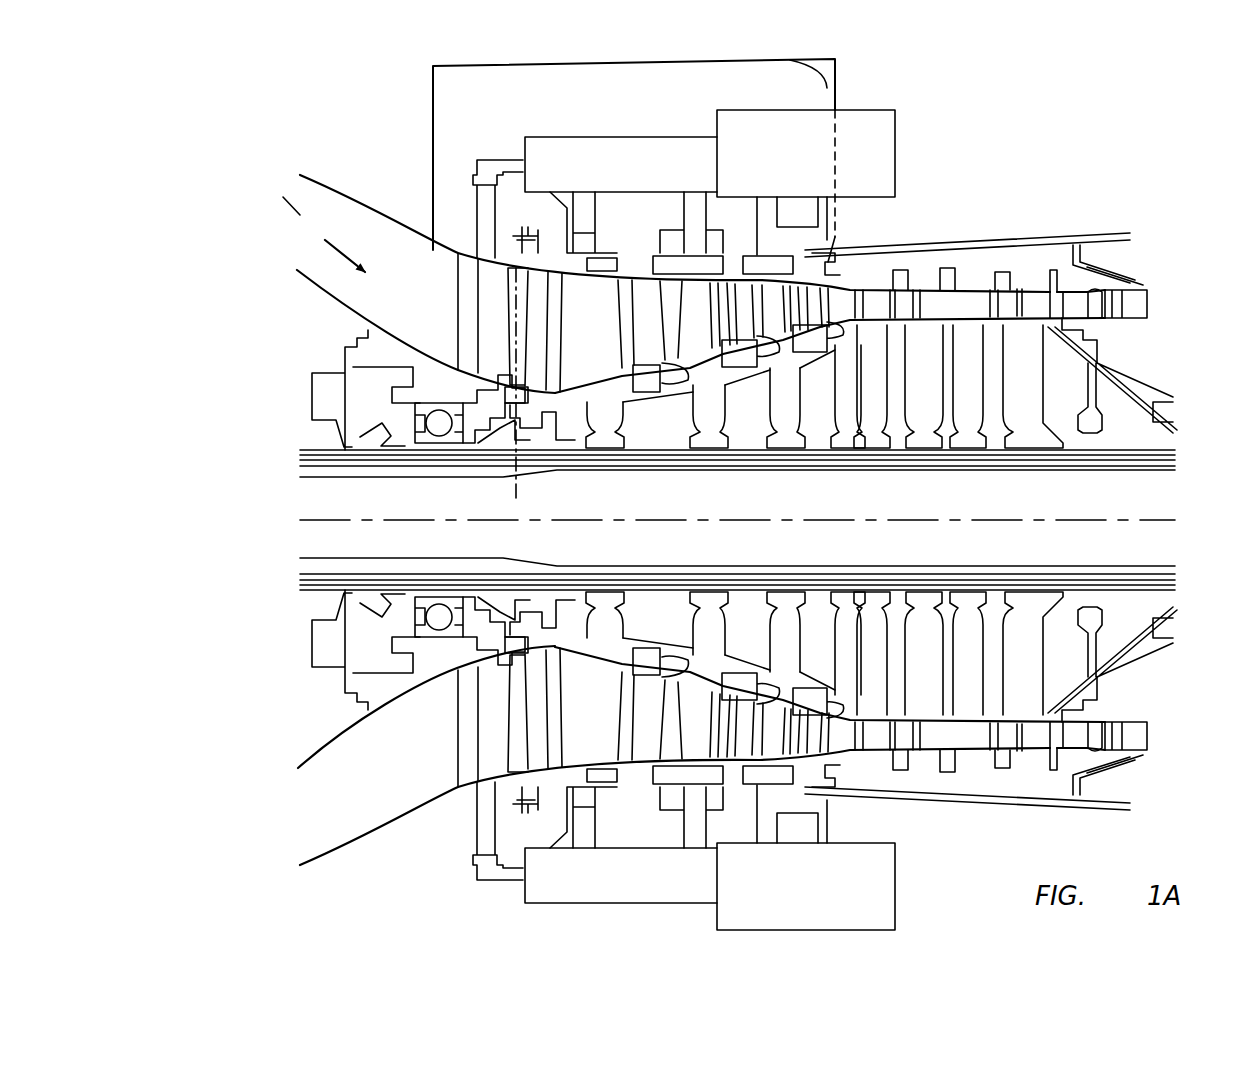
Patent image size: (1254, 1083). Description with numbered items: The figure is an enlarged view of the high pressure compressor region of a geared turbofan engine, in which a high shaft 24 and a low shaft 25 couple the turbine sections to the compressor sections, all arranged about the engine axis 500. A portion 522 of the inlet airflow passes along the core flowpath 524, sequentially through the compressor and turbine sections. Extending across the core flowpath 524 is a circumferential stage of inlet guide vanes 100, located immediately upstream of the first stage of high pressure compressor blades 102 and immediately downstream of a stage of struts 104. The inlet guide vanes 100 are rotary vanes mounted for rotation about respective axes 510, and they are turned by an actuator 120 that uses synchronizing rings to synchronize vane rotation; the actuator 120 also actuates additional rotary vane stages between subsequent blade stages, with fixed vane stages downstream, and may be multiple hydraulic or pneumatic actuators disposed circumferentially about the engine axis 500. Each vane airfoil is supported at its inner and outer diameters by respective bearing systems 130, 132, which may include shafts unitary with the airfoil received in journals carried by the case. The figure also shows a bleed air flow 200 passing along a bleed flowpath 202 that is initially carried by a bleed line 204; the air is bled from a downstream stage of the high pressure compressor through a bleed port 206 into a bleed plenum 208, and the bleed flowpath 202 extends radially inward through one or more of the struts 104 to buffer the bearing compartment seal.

The inlet guide vanes 100 is at (506, 327).
The high pressure compressor blades 102 is at (596, 325).
The struts 104 is at (400, 275).
The actuator 120 is at (910, 131).
The bearing system 130 is at (498, 410).
The bearing system 132 is at (540, 246).
The bleed air flow 200 is at (790, 63).
The bleed flowpath 202 is at (858, 75).
The bleed line 204 is at (833, 58).
The bleed port 206 is at (842, 260).
The bleed plenum 208 is at (882, 266).
The high shaft 24 is at (292, 456).
The low shaft 25 is at (292, 479).
The engine axis 500 is at (1152, 518).
The axes 510 is at (518, 490).
The portion 522 is at (348, 238).
The core flowpath 524 is at (303, 222).